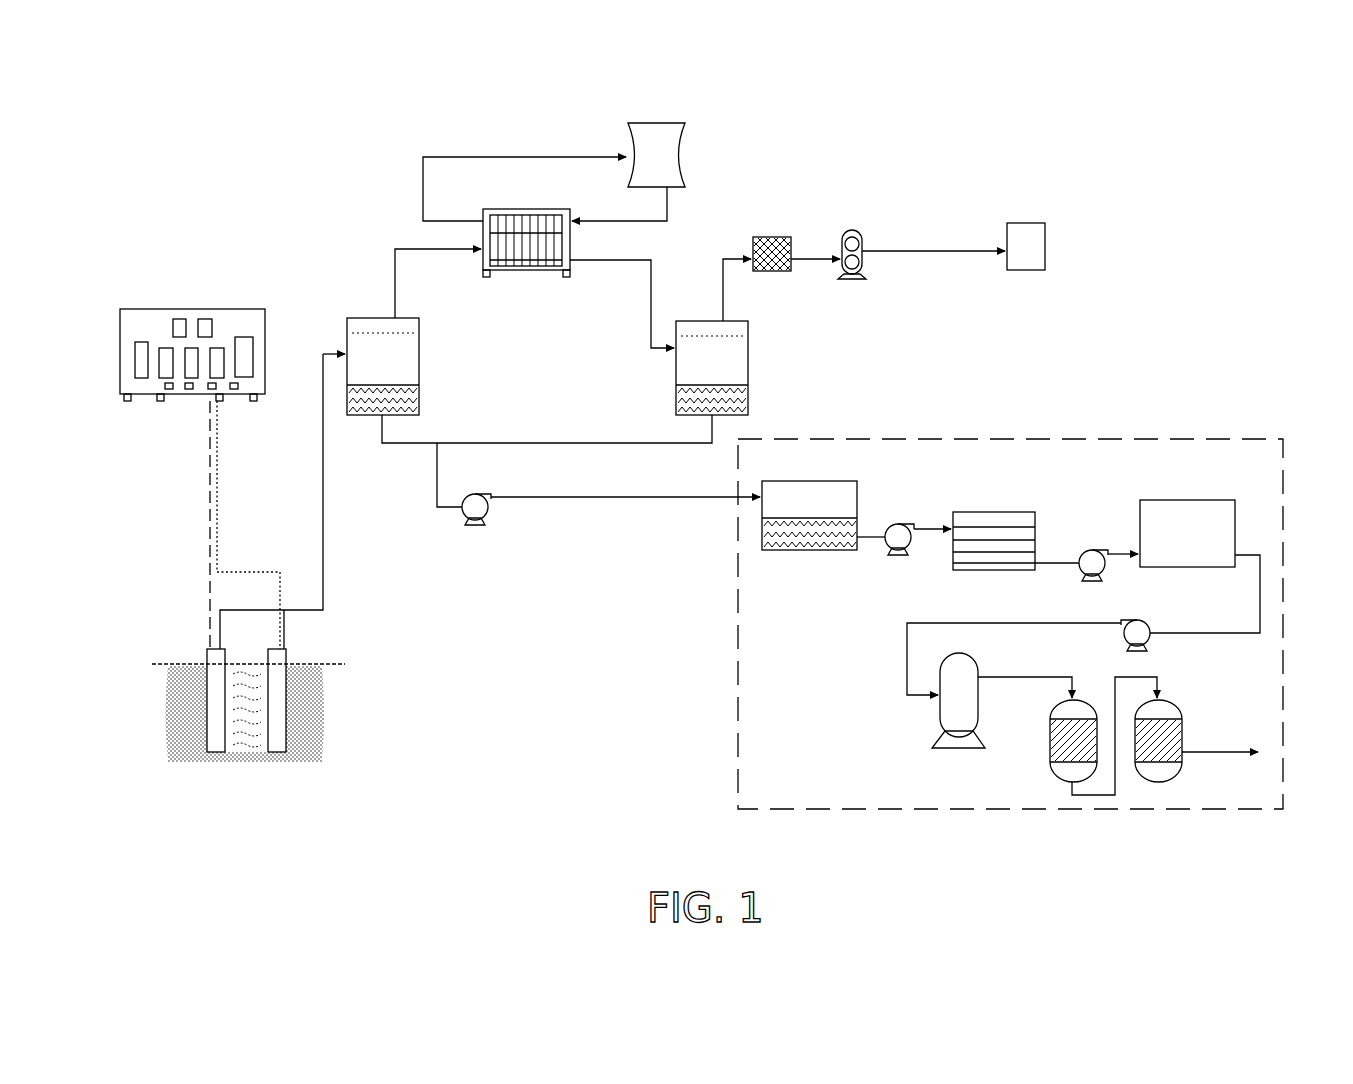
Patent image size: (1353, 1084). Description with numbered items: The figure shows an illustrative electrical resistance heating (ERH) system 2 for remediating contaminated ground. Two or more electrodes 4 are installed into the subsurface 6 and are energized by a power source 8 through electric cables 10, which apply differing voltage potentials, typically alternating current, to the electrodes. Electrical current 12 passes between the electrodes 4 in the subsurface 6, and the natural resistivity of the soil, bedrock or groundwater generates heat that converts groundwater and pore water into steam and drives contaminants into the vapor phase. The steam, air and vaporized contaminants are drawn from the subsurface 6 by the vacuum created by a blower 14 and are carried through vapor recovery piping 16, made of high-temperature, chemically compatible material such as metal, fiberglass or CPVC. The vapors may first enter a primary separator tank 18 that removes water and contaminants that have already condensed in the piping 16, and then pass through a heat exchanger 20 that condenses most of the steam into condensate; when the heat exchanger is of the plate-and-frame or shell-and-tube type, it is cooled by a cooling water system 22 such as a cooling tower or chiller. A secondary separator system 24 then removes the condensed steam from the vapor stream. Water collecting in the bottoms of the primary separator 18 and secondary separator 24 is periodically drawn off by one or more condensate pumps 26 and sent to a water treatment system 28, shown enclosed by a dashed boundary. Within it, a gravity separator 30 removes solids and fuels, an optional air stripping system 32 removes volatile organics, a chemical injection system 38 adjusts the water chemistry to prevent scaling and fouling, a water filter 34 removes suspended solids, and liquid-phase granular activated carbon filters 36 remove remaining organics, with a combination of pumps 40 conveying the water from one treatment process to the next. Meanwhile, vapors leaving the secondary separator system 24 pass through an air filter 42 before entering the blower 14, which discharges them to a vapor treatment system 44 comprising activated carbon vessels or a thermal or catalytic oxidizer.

The ERH system 2 is at (310, 107).
The electrodes 4 is at (207, 703).
The subsurface 6 is at (248, 713).
The power source 8 is at (170, 308).
The electric cables 10 is at (217, 458).
The electrical current 12 is at (242, 742).
The blower 14 is at (856, 231).
The vapor recovery piping 16 is at (326, 528).
The primary separator tank 18 is at (419, 352).
The heat exchanger 20 is at (525, 210).
The cooling water system 22 is at (672, 123).
The secondary separator system 24 is at (748, 363).
The condensate pumps 26 is at (478, 498).
The water treatment system 28 is at (1043, 440).
The gravity separators 30 is at (857, 495).
The air stripping system 32 is at (985, 512).
The water filters 34 is at (978, 666).
The liquid-phase granular activated carbon filters 36 is at (1050, 740).
The chemical injection system 38 is at (1180, 500).
The pumps 40 is at (905, 526).
The air filter 42 is at (772, 237).
The vapor treatment system 44 is at (1016, 223).